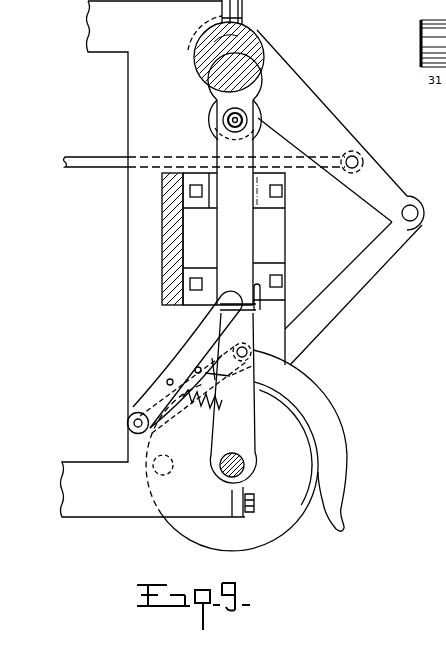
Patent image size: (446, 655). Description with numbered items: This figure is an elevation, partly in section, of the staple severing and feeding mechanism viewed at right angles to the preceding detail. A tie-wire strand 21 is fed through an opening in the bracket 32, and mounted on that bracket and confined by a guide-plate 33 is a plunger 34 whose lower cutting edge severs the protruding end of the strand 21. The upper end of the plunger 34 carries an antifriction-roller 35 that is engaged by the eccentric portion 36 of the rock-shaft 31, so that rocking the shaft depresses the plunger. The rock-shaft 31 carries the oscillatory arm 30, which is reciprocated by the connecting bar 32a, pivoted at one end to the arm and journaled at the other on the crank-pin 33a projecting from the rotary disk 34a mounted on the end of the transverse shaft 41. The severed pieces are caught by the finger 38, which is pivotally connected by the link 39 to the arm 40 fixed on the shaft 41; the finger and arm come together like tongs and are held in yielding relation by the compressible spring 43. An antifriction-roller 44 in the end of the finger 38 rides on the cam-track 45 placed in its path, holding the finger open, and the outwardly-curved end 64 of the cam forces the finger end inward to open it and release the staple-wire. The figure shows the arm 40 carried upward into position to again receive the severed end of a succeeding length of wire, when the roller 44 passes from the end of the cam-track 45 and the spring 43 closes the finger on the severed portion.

The strand 21 is at (205, 313).
The oscillatory arm 30 is at (333, 122).
The rock-shaft 31 is at (230, 33).
The bracket 32 is at (275, 238).
The connecting bar 32a is at (358, 273).
The guide-plate 33 is at (223, 183).
The crank-pin 33a is at (146, 473).
The plunger 34 is at (222, 247).
The rotary disk 34a is at (265, 502).
The antifriction-roller 35 is at (207, 118).
The eccentric portion 36 is at (255, 78).
The finger 38 is at (187, 359).
The link 39 is at (219, 370).
The arm 40 is at (243, 420).
The transverse shaft 41 is at (245, 458).
The compressible spring 43 is at (207, 413).
The antifriction-roller 44 is at (128, 421).
The cam-track 45 is at (348, 453).
The outwardly-curved end 64 is at (332, 520).